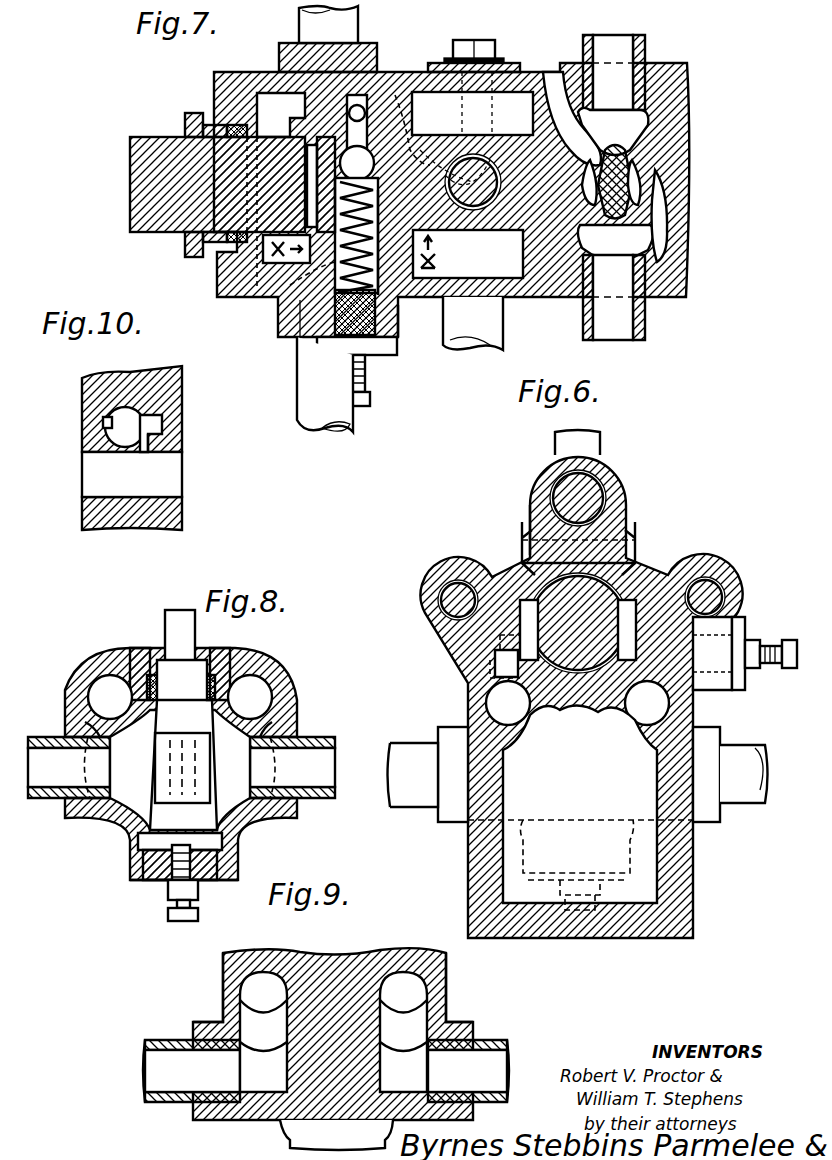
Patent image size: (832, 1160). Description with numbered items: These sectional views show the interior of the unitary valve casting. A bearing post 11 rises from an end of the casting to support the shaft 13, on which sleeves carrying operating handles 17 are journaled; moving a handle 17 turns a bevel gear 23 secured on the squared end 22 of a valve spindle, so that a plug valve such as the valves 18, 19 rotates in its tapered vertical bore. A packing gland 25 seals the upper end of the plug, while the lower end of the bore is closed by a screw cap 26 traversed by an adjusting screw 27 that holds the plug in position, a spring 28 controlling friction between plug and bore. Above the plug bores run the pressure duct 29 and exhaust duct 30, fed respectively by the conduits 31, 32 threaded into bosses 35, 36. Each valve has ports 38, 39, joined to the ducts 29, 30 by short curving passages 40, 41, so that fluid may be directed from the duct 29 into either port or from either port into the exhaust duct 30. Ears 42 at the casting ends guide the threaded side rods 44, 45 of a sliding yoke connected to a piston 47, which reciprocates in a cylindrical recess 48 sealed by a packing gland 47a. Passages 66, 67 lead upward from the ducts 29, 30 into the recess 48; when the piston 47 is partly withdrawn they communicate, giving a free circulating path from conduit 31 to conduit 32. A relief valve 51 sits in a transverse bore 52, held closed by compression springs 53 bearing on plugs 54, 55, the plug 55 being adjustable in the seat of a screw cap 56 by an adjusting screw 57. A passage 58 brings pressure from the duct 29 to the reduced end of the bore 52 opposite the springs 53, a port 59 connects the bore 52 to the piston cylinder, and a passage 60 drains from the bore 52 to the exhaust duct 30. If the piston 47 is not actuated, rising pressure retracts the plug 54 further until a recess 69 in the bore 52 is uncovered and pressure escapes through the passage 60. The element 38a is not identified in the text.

In FIG. 6, the bearing post 11 is at (545, 493).
In FIG. 6, the shaft 13 is at (595, 493).
In FIG. 6, the operating handle 17 is at (560, 446).
In FIG. 7, the valve 18 is at (484, 135).
In FIG. 7, the valve 19 is at (614, 155).
In FIG. 8, the valve 19 is at (190, 718).
In FIG. 8, the squared end 22 is at (170, 620).
In FIG. 6, the bevel gear 23 is at (522, 558).
In FIG. 8, the packing gland 25 is at (215, 650).
In FIG. 8, the screw cap 26 is at (152, 882).
In FIG. 8, the adjusting screw 27 is at (198, 900).
In FIG. 8, the spring 28 is at (140, 845).
In FIG. 7, the pressure duct 29 is at (495, 72).
In FIG. 8, the pressure duct 29 is at (106, 688).
In FIG. 9, the pressure duct 29 is at (248, 990).
In FIG. 6, the pressure duct 29 is at (490, 700).
In FIG. 7, the exhaust duct 30 is at (490, 300).
In FIG. 10, the exhaust duct 30 is at (166, 478).
In FIG. 8, the exhaust duct 30 is at (262, 688).
In FIG. 9, the exhaust duct 30 is at (410, 992).
In FIG. 6, the exhaust duct 30 is at (665, 710).
In FIG. 7, the conduit 31 is at (350, 21).
In FIG. 9, the conduit 31 is at (172, 1040).
In FIG. 6, the conduit 31 is at (420, 800).
In FIG. 7, the conduit 32 is at (308, 412).
In FIG. 9, the conduit 32 is at (490, 1040).
In FIG. 6, the conduit 32 is at (747, 800).
In FIG. 7, the boss 35 is at (290, 43).
In FIG. 9, the boss 35 is at (212, 1020).
In FIG. 6, the boss 35 is at (452, 812).
In FIG. 7, the boss 36 is at (302, 300).
In FIG. 9, the boss 36 is at (476, 1016).
In FIG. 6, the boss 36 is at (710, 812).
In FIG. 7, the port 38 is at (632, 89).
In FIG. 8, the port 38 is at (92, 790).
In FIG. 7, the plug bolt 38a is at (466, 40).
In FIG. 7, the port 39 is at (630, 272).
In FIG. 8, the port 39 is at (268, 790).
In FIG. 7, the curving passage 40 is at (442, 72).
In FIG. 8, the curving passage 40 is at (95, 727).
In FIG. 7, the curving passage 41 is at (590, 241).
In FIG. 8, the curving passage 41 is at (266, 726).
In FIG. 6, the ear 42 is at (455, 566).
In FIG. 6, the side rod 44 is at (440, 600).
In FIG. 6, the side rod 45 is at (720, 598).
In FIG. 7, the piston 47 is at (150, 185).
In FIG. 6, the piston 47 is at (585, 690).
In FIG. 7, the packing gland 47a is at (190, 128).
In FIG. 7, the cylindrical recess 48 is at (218, 268).
In FIG. 7, the relief valve 51 is at (395, 95).
In FIG. 7, the bore 52 is at (337, 262).
In FIG. 10, the bore 52 is at (108, 418).
In FIG. 6, the bore 52 is at (625, 598).
In FIG. 7, the compression spring 53 is at (320, 305).
In FIG. 7, the plug 54 is at (468, 160).
In FIG. 7, the plug 55 is at (398, 340).
In FIG. 7, the screw cap 56 is at (330, 355).
In FIG. 6, the screw cap 56 is at (745, 690).
In FIG. 7, the adjusting screw 57 is at (366, 382).
In FIG. 6, the adjusting screw 57 is at (772, 665).
In FIG. 7, the passage 58 is at (350, 100).
In FIG. 6, the passage 58 is at (495, 672).
In FIG. 7, the port 59 is at (320, 196).
In FIG. 7, the passage 60 is at (385, 295).
In FIG. 10, the passage 60 is at (158, 440).
In FIG. 7, the passage 66 is at (272, 95).
In FIG. 6, the passage 66 is at (470, 640).
In FIG. 7, the passage 67 is at (282, 288).
In FIG. 6, the passage 67 is at (735, 617).
In FIG. 7, the recess 69 is at (456, 232).
In FIG. 10, the recess 69 is at (150, 425).